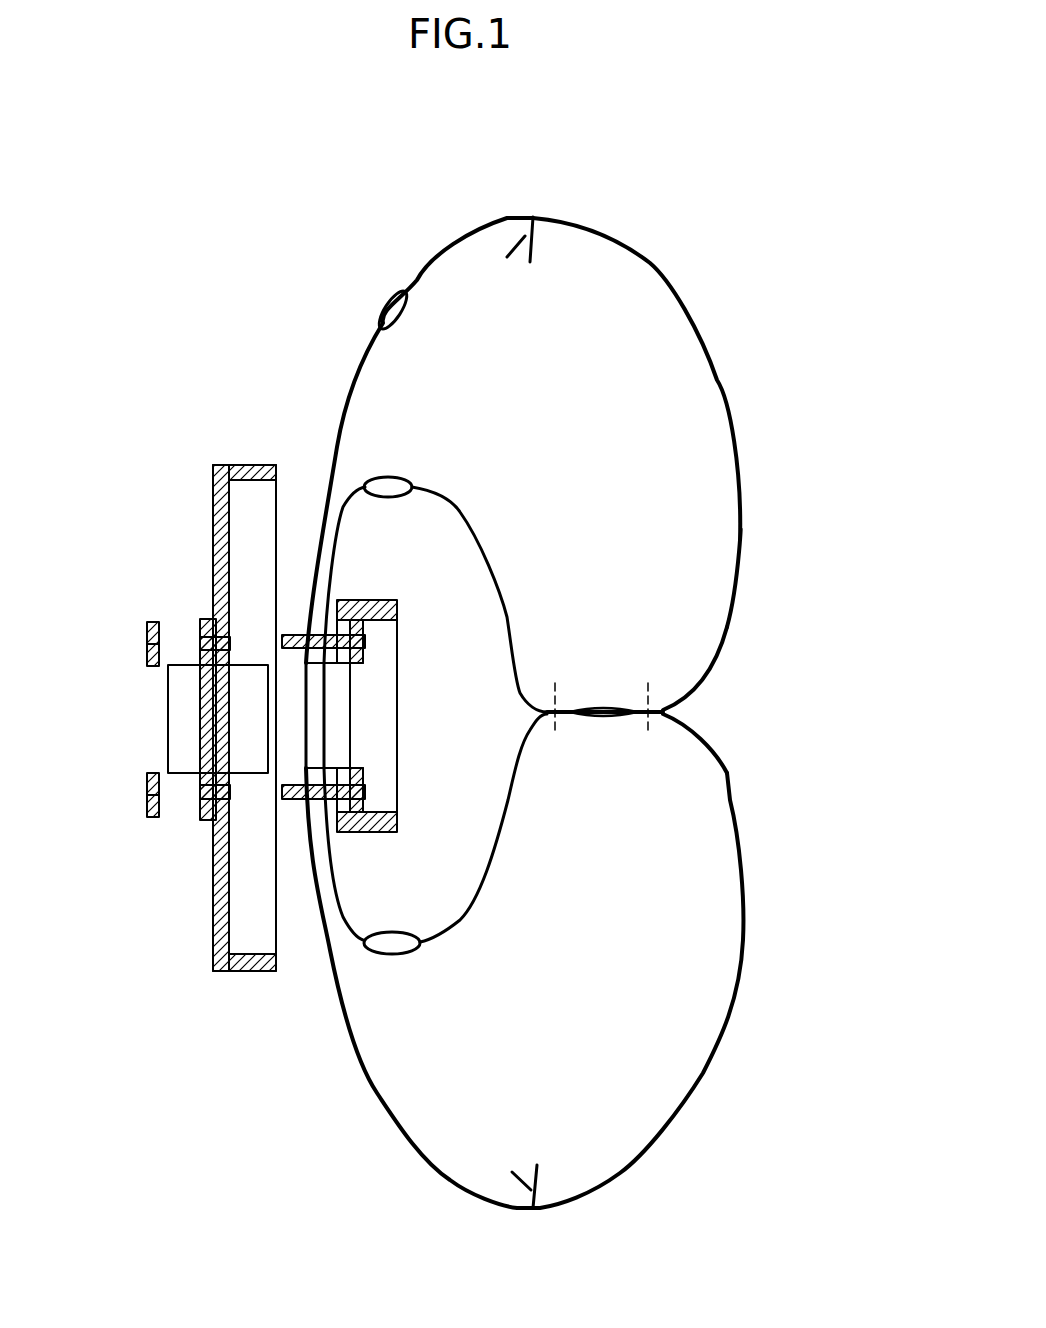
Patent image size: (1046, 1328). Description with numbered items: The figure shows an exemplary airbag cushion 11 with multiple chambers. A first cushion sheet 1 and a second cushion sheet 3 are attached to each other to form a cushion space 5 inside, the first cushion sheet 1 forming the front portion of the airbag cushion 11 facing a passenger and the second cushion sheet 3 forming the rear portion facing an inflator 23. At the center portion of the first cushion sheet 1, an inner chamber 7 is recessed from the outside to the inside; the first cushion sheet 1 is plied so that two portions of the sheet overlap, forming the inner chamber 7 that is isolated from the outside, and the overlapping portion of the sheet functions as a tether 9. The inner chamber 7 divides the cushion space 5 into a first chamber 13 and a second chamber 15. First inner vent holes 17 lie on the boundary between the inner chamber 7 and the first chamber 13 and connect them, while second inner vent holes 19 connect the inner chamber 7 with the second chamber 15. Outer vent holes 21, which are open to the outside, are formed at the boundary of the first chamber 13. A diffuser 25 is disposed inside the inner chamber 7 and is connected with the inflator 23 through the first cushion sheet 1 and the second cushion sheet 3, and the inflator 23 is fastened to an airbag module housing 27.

The first cushion sheet 1 is at (687, 323).
The second cushion sheet 3 is at (443, 248).
The cushion space 5 is at (857, 640).
The inner chamber 7 is at (463, 567).
The tether 9 is at (555, 683).
The airbag cushion 11 is at (655, 246).
The first chamber 13 is at (708, 660).
The second chamber 15 is at (708, 776).
The first inner vent holes 17 is at (388, 477).
The second inner vent holes 19 is at (390, 953).
The outer vent holes 21 is at (385, 302).
The inflator 23 is at (168, 718).
The diffuser 25 is at (367, 600).
The airbag module housing 27 is at (213, 510).